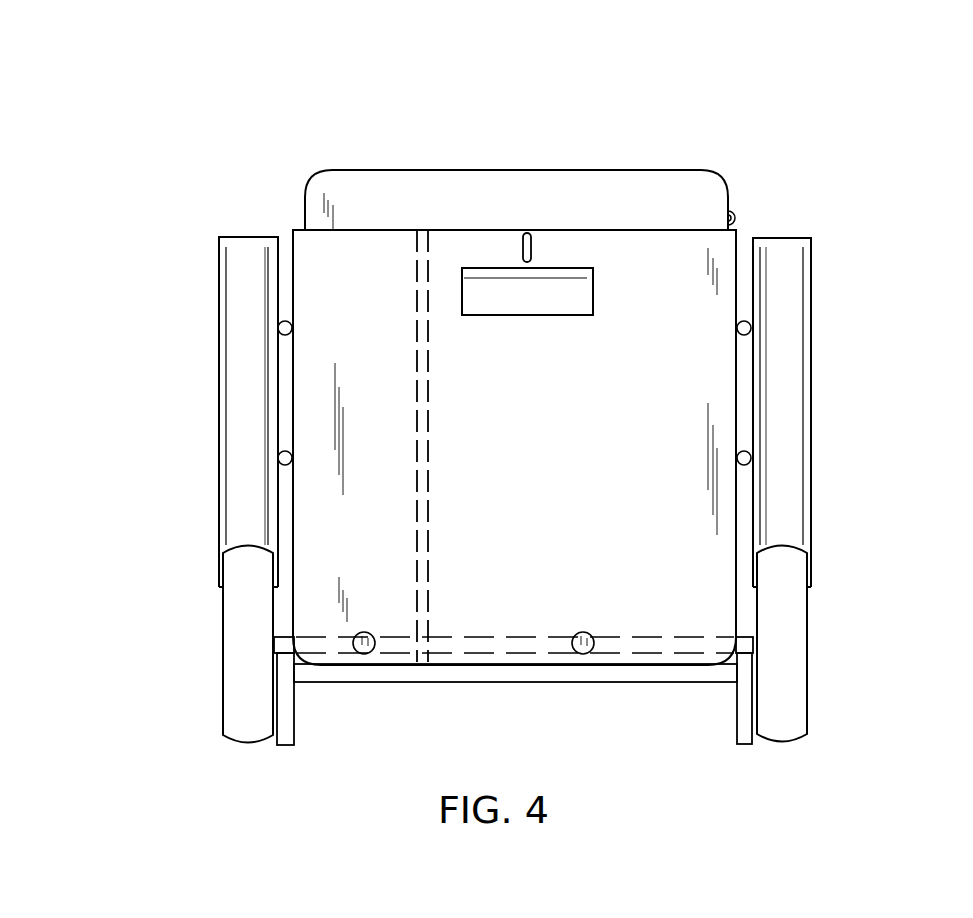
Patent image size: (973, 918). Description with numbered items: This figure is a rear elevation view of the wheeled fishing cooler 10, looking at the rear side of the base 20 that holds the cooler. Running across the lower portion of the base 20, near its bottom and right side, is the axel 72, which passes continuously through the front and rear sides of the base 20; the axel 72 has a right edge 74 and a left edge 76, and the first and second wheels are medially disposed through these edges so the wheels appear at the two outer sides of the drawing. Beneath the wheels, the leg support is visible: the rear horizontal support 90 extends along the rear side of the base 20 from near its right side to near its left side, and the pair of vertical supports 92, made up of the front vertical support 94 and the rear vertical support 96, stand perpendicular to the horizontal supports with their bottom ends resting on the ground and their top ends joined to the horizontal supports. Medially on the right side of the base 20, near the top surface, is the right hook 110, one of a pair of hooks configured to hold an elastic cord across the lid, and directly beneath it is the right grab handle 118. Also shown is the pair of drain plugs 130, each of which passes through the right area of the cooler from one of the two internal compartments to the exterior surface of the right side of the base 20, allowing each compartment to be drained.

The wheeled fishing cooler 10 is at (840, 138).
The base 20 is at (703, 374).
The axel 72 is at (669, 645).
The right edge 74 is at (273, 643).
The left edge 76 is at (754, 643).
The rear horizontal support 90 is at (750, 455).
The pair of vertical supports 92 is at (280, 457).
The front vertical support 94 is at (288, 719).
The rear vertical support 96 is at (738, 717).
The right hook 110 is at (529, 232).
The right grab handle 118 is at (478, 283).
The pair of drain plugs 130 is at (580, 654).